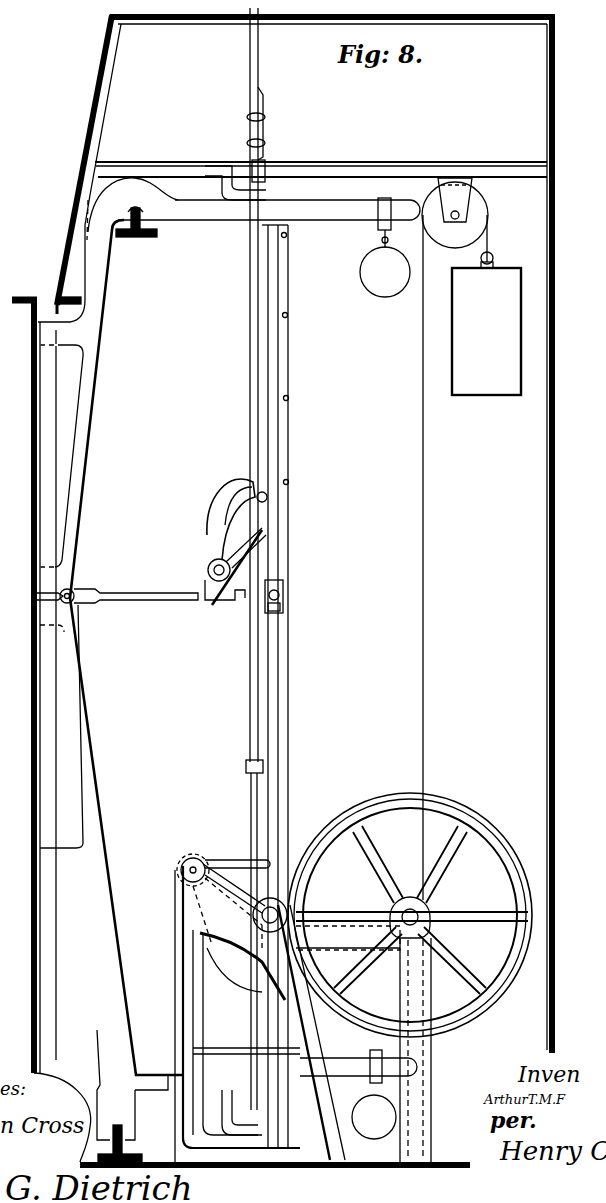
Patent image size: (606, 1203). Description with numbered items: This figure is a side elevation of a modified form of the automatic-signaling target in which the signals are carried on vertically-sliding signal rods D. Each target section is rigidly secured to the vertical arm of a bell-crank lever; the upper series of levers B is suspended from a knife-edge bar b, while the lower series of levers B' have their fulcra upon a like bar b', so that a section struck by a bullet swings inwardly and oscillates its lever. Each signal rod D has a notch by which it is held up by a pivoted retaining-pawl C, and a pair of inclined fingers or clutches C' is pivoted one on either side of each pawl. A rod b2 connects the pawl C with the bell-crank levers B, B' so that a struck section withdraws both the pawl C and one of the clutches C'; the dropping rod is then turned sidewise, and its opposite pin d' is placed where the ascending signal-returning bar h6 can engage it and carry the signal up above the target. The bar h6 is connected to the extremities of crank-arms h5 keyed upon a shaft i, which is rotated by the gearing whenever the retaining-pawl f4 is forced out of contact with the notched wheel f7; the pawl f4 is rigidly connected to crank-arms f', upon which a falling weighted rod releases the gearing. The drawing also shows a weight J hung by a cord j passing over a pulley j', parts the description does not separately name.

The bell-crank lever B is at (109, 388).
The bell-crank lever B' is at (111, 869).
The knife-edge bar b is at (140, 236).
The knife-edge bar b' is at (136, 1141).
The rod b2 is at (130, 600).
The retaining-pawl C is at (219, 519).
The inclined finger or clutch C' is at (220, 566).
The signal rod D is at (262, 410).
The pin d' is at (288, 493).
The crank-arm h5 is at (272, 996).
The signal-returning bar h6 is at (291, 580).
The connecting rod i is at (243, 896).
The crank-arm f' is at (199, 863).
The retaining-pawl f4 is at (180, 912).
The notched wheel f7 is at (322, 884).
The weight J is at (486, 323).
The cord j is at (406, 557).
The pulley j' is at (455, 220).